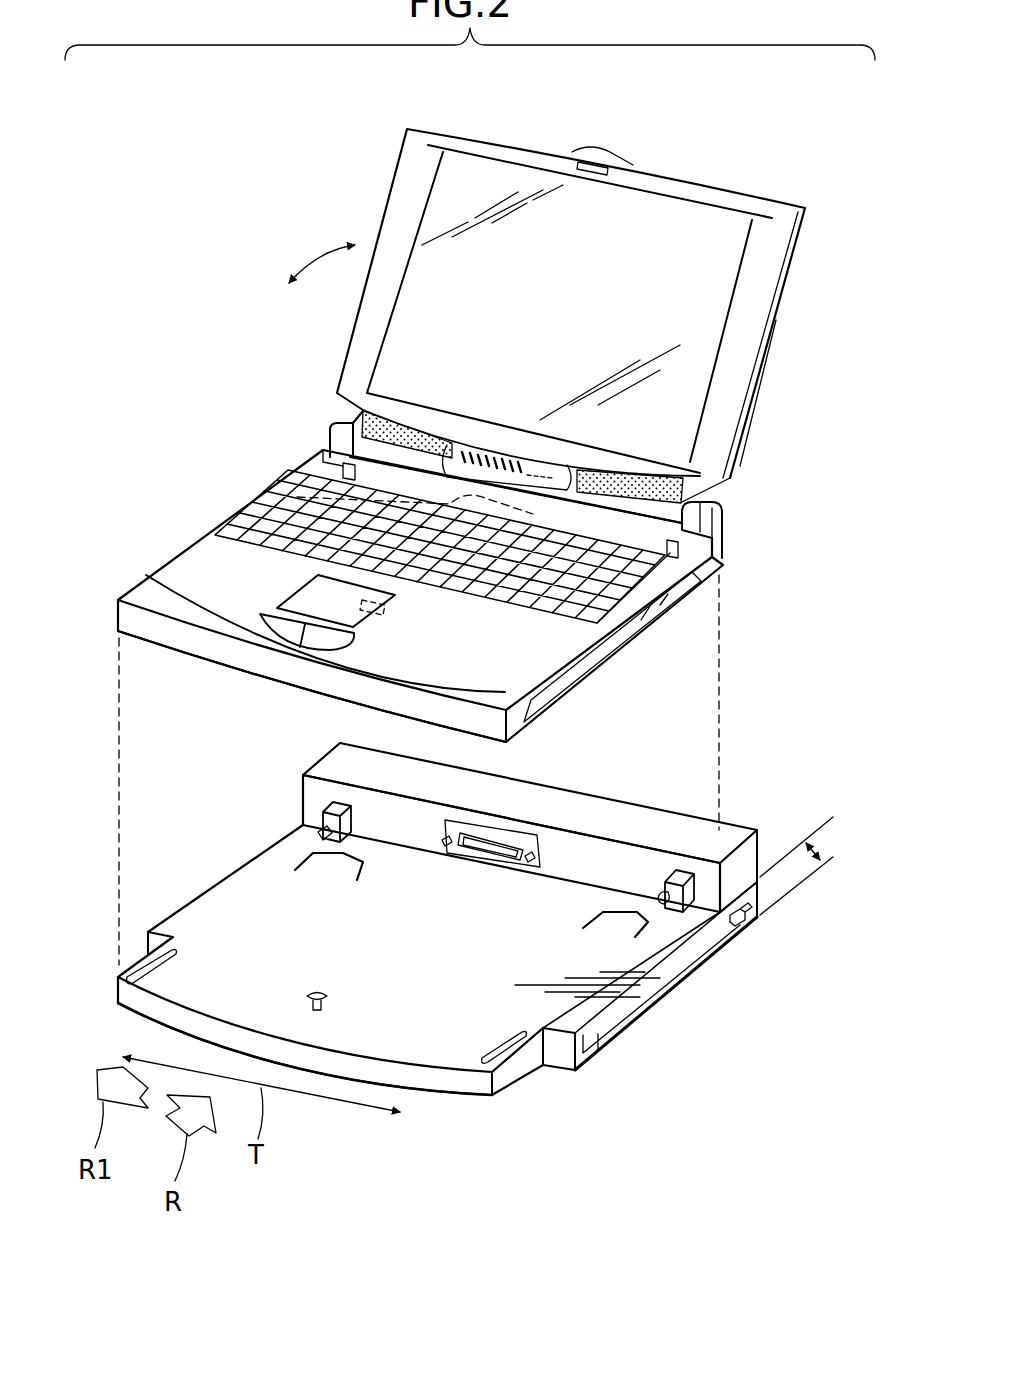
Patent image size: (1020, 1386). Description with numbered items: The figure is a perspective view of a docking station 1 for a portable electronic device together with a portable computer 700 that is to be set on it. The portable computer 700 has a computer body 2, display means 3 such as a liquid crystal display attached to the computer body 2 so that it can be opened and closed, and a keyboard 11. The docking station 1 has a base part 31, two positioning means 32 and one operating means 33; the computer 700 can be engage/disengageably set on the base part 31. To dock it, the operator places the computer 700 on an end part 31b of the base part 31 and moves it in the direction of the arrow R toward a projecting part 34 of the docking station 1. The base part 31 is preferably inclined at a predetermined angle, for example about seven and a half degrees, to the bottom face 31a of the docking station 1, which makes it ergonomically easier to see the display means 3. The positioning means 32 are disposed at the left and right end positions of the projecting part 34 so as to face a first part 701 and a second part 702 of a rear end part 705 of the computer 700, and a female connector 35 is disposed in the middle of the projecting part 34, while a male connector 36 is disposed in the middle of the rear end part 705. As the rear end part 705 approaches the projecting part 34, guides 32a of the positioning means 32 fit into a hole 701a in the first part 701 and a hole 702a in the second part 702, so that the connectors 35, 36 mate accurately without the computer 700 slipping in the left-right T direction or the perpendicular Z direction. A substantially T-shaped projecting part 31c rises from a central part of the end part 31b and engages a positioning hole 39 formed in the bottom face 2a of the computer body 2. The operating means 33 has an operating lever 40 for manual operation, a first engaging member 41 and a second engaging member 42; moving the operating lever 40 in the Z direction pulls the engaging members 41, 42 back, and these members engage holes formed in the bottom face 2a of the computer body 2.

The portable computer 700 is at (652, 153).
The display means 3 is at (691, 301).
The second part 702 is at (358, 423).
The hole 702a is at (340, 465).
The male connector 36 is at (297, 497).
The first part 701 is at (685, 495).
The rear end part 705 is at (723, 532).
The hole 701a is at (682, 545).
The keyboard 11 is at (613, 586).
The computer body 2 is at (537, 663).
The bottom face 2a is at (247, 682).
The positioning hole 39 is at (382, 600).
The docking station 1 is at (512, 1105).
The projecting part 34 is at (328, 770).
The female connector 35 is at (510, 842).
The base part 31 is at (458, 1060).
The bottom face 31a is at (575, 1068).
The end part 31b is at (370, 1035).
The projecting part 31c is at (310, 993).
The positioning means 32 is at (667, 903).
The guide 32a is at (318, 832).
The operating means 33 is at (747, 933).
The operating lever 40 is at (762, 912).
The first engaging member 41 is at (728, 922).
The second engaging member 42 is at (297, 873).